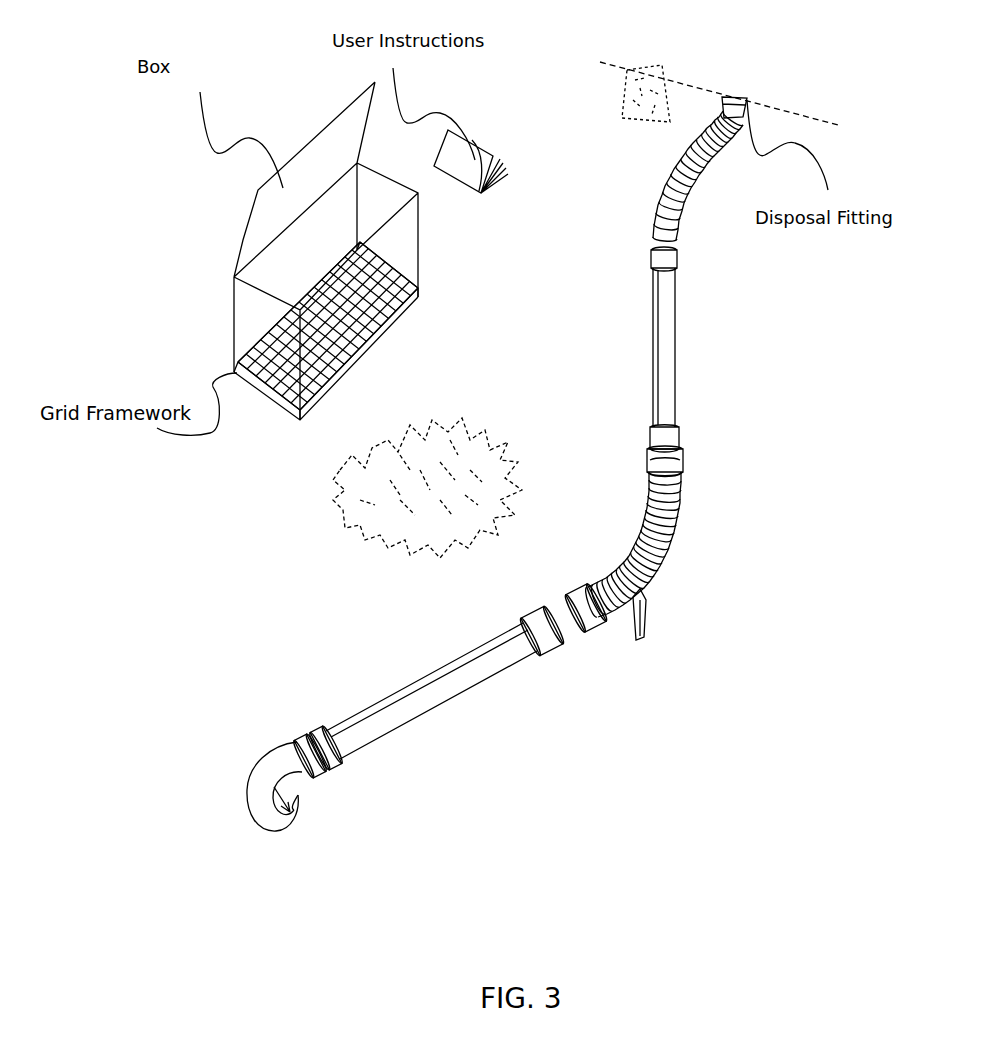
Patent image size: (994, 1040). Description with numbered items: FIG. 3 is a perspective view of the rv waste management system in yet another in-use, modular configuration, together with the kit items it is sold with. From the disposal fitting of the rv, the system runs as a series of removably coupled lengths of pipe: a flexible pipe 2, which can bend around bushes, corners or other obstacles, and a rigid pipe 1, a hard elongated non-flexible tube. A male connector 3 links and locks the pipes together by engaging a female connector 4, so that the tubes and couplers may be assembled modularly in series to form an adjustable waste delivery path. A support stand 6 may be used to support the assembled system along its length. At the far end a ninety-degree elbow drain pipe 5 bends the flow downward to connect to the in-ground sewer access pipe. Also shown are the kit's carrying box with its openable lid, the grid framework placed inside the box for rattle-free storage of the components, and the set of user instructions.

The rigid pipe 1 is at (663, 350).
The flexible pipe 2 is at (663, 560).
The male connector 3 is at (657, 428).
The female connector 4 is at (680, 480).
The 90 degree elbow drain pipe 5 is at (290, 813).
The support stand 6 is at (637, 652).